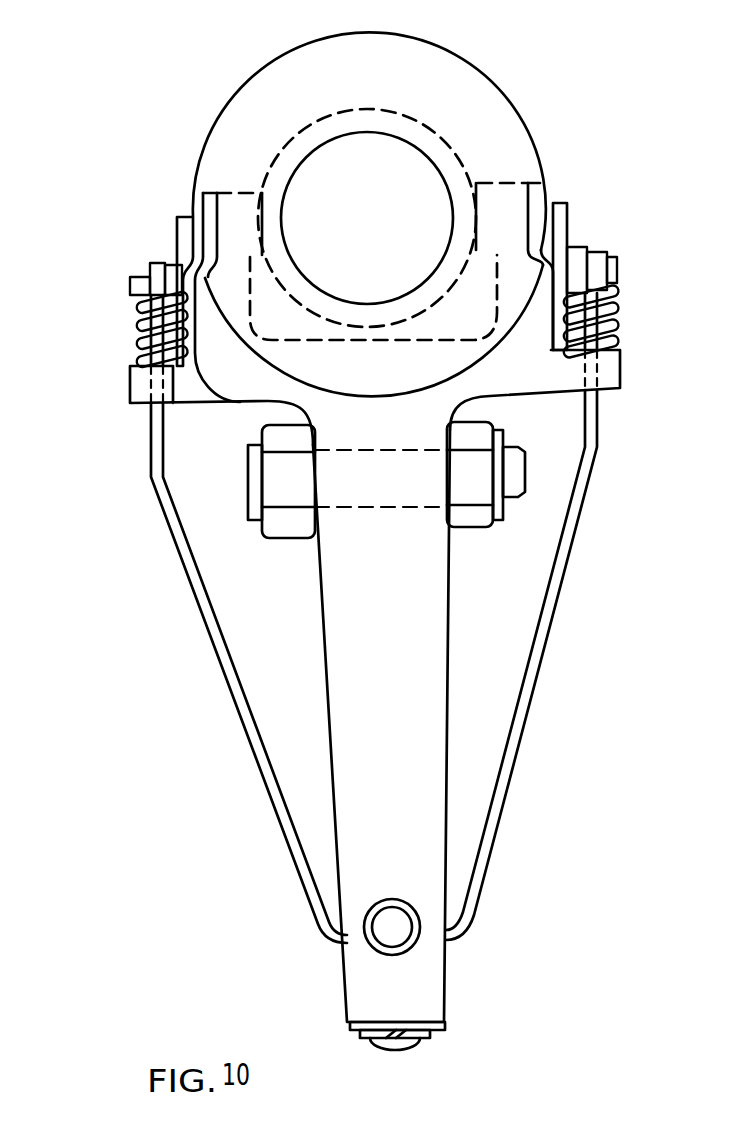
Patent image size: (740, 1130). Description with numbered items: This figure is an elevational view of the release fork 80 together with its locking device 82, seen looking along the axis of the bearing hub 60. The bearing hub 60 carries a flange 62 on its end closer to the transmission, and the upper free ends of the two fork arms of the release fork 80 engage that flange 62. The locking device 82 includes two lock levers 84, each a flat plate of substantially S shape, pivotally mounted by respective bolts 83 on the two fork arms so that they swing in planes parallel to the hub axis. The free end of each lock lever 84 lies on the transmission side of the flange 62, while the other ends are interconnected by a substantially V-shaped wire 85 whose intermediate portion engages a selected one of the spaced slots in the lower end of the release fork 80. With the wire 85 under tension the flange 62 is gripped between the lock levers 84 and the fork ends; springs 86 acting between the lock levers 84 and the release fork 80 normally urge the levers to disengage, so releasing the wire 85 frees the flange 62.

The bearing hub 60 is at (298, 137).
The flange 62 is at (503, 142).
The release fork 80 is at (425, 860).
The locking device 82 is at (370, 544).
The bolts 83 is at (160, 267).
The lock levers 84 is at (185, 216).
The wire 85 is at (507, 765).
The springs 86 is at (133, 340).